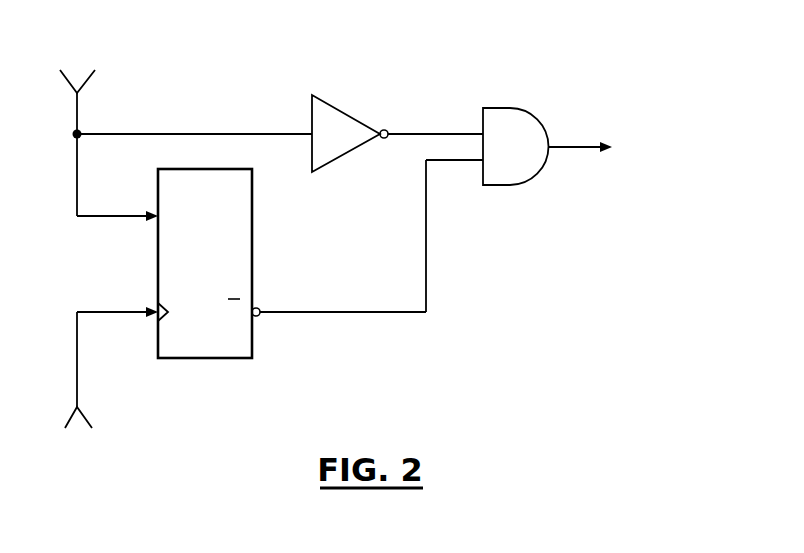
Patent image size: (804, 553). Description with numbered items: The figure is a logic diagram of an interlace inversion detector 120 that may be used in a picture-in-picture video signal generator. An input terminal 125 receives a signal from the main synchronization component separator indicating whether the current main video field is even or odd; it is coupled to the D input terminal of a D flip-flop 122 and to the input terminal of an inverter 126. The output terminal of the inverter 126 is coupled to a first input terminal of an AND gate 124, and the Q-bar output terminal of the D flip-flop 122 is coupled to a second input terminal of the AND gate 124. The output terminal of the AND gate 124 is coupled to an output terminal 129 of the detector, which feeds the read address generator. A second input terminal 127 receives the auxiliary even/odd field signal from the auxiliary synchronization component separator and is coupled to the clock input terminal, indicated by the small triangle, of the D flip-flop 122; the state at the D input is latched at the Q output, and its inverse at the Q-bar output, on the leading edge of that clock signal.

The interlace inversion detector 120 is at (365, 264).
The D flip-flop 122 is at (253, 262).
The AND gate 124 is at (507, 108).
The input terminal 125 is at (85, 88).
The inverter 126 is at (361, 120).
The input terminal 127 is at (88, 414).
The output terminal 129 is at (602, 142).